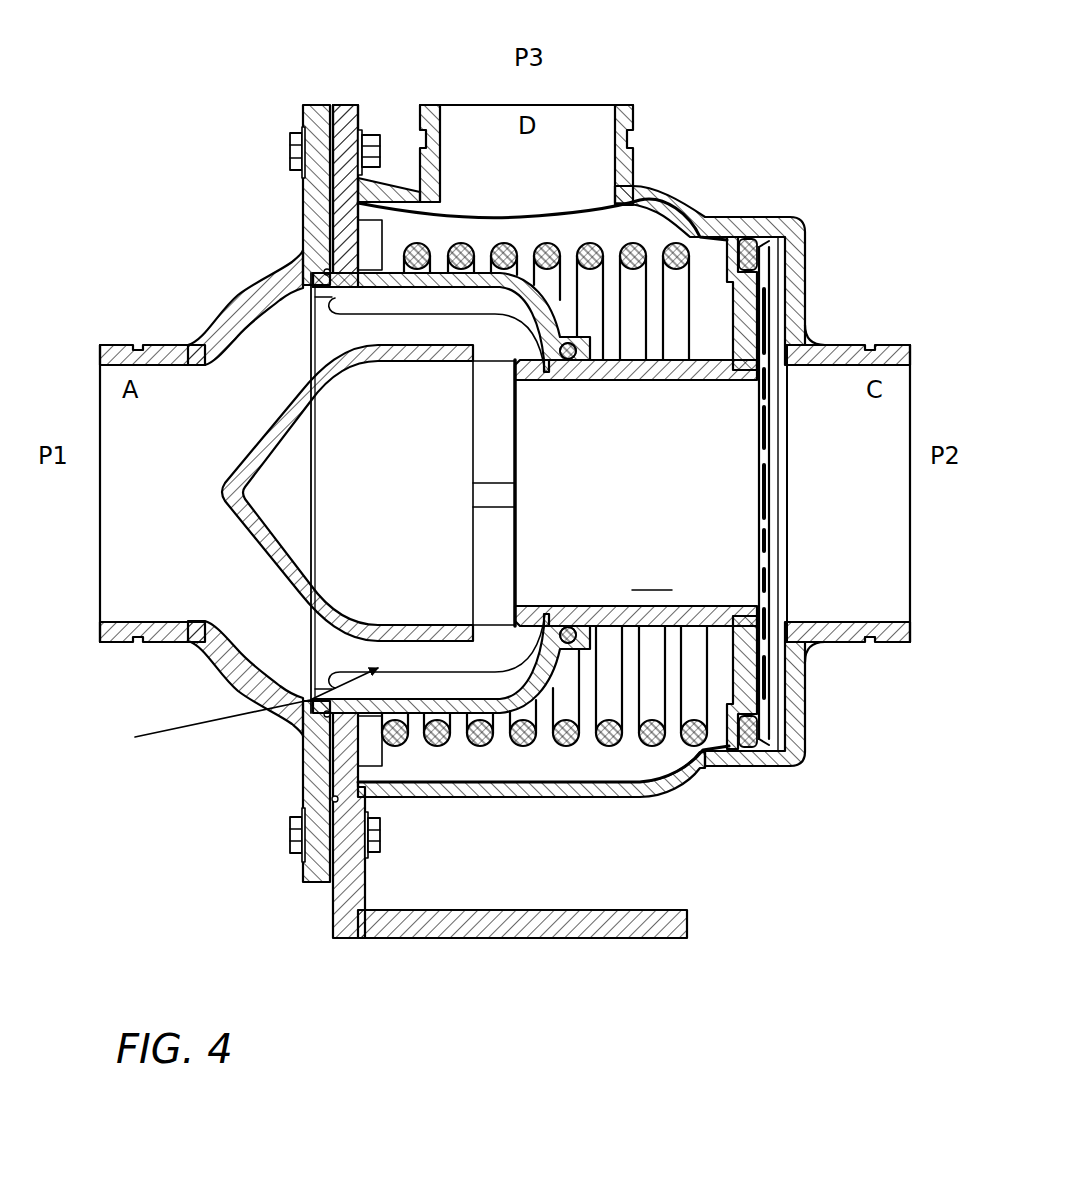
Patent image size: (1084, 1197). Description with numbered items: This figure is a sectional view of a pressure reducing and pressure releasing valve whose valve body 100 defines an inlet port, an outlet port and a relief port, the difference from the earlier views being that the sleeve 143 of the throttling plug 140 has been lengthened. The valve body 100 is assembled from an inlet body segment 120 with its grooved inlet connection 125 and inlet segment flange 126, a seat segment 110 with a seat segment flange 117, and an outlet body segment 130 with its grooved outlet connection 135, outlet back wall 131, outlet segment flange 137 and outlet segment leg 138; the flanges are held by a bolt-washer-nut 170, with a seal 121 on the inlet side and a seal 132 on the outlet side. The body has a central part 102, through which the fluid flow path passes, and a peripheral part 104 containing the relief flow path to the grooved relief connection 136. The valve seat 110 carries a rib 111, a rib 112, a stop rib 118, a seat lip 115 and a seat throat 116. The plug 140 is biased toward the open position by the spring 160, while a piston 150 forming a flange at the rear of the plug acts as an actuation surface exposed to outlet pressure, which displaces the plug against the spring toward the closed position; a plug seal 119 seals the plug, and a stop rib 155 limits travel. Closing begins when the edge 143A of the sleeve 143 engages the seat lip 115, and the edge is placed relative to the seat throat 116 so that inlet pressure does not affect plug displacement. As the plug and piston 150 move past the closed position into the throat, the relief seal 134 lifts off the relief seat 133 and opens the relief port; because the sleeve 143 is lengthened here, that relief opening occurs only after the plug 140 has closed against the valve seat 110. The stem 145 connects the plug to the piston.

The valve body 100 is at (190, 142).
The central part 102 is at (654, 577).
The peripheral part 104 is at (660, 228).
The valve seat 110 is at (245, 555).
The rib 111 is at (235, 709).
The rib 112 is at (352, 198).
The seat lip 115 is at (473, 550).
The seat throat 116 is at (420, 366).
The seat segment flange 117 is at (347, 770).
The stop rib 118 is at (587, 676).
The plug seal 119 is at (567, 364).
The inlet body segment 120 is at (232, 307).
The seal 121 is at (327, 722).
The inlet connection grooved 125 is at (140, 343).
The inlet segment flange 126 is at (322, 228).
The outlet body segment 130 is at (688, 783).
The outlet back wall 131 is at (802, 685).
The seal 132 is at (333, 190).
The relief seat 133 is at (703, 232).
The relief seal 134 is at (742, 244).
The outlet connection grooved 135 is at (872, 346).
The relief connection grooved 136 is at (635, 138).
The outlet segment flange 137 is at (348, 120).
The outlet segment leg 138 is at (478, 910).
The throttling plug 140 is at (673, 381).
The sleeve 143 is at (624, 382).
The edge of the sleeve 143A is at (513, 370).
The stem 145 is at (516, 552).
The piston 150 is at (742, 305).
The stop rib 155 is at (765, 722).
The spring 160 is at (650, 742).
The bolt-washer-nut 170 is at (290, 838).